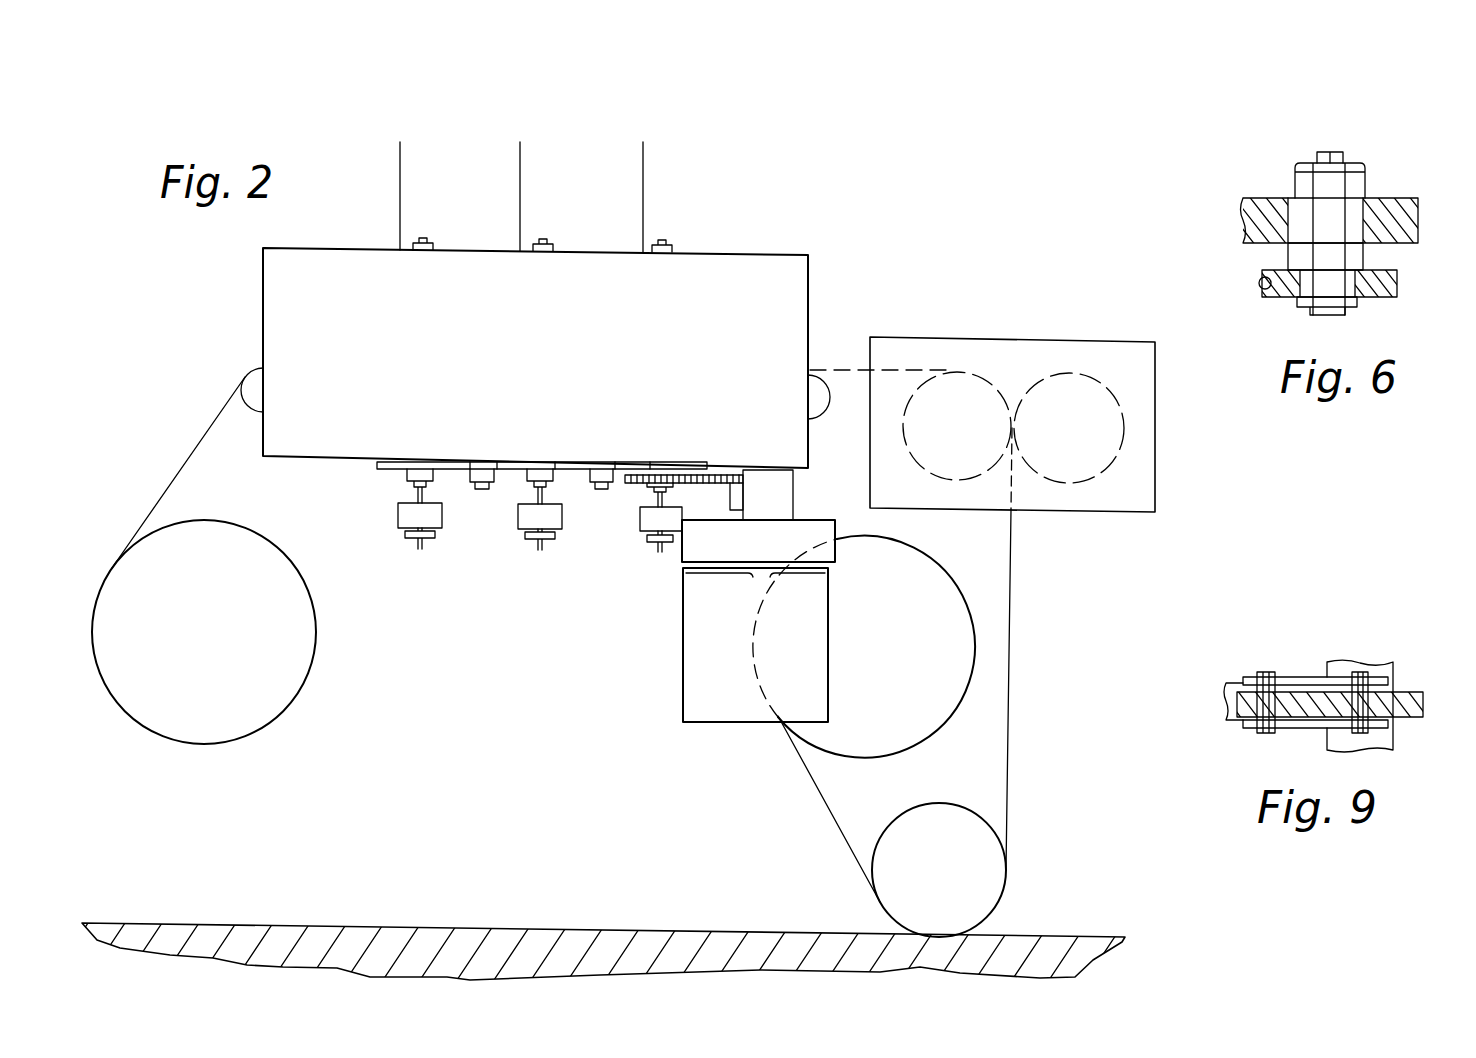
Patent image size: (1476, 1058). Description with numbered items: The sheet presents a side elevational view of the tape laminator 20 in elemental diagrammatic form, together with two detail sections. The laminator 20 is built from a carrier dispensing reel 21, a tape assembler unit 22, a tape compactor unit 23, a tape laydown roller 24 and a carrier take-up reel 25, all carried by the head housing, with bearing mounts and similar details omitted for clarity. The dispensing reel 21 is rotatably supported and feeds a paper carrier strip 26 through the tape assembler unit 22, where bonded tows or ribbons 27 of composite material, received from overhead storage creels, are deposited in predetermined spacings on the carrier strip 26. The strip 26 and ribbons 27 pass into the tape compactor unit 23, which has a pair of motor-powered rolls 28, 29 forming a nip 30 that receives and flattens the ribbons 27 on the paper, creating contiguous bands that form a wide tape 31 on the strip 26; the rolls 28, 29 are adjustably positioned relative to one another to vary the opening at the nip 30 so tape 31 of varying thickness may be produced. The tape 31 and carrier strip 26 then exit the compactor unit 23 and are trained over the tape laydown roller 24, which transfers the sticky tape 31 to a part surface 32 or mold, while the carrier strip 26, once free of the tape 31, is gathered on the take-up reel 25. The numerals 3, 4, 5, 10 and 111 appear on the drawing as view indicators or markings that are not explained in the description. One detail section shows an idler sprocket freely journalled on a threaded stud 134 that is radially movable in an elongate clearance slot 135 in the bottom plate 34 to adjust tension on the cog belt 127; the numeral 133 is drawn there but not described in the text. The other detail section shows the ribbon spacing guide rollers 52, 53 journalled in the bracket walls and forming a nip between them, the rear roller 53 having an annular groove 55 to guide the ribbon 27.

In FIG. 2, the tape laminator 20 is at (825, 235).
In FIG. 2, the tape assembler unit 22 is at (538, 480).
In FIG. 2, the ribbons 27 is at (663, 198).
In FIG. 2, the section view indicator 3 is at (478, 118).
In FIG. 2, the section view indicator 10 is at (614, 115).
In FIG. 2, the section view indicator 5 is at (200, 357).
In FIG. 2, the view indicator 4 is at (1140, 585).
In FIG. 2, the paper carrier strip 26 is at (168, 487).
In FIG. 2, the carrier dispensing reel 21 is at (204, 632).
In FIG. 2, the carrier take-up reel 25 is at (864, 719).
In FIG. 2, the tape compactor unit 23 is at (982, 395).
In FIG. 2, the nip 30 is at (1062, 358).
In FIG. 2, the roll 28 is at (943, 480).
In FIG. 2, the roll 29 is at (1072, 482).
In FIG. 2, the tape 31 is at (1012, 588).
In FIG. 2, the tape laydown roller 24 is at (939, 870).
In FIG. 2, the lay-down roller surface 111 is at (1012, 897).
In FIG. 2, the part surface 32 is at (1067, 937).
In FIG. 6, the bottom plate 34 is at (1390, 198).
In FIG. 6, the elongate clearance slot 135 is at (1295, 202).
In FIG. 6, the threaded stud 134 is at (1302, 255).
In FIG. 6, the flange 133 is at (1397, 266).
In FIG. 6, the cog belt 127 is at (1259, 284).
In FIG. 9, the roller 52 is at (1422, 692).
In FIG. 9, the rear roller 53 is at (1238, 713).
In FIG. 9, the annular groove 55 is at (1225, 700).